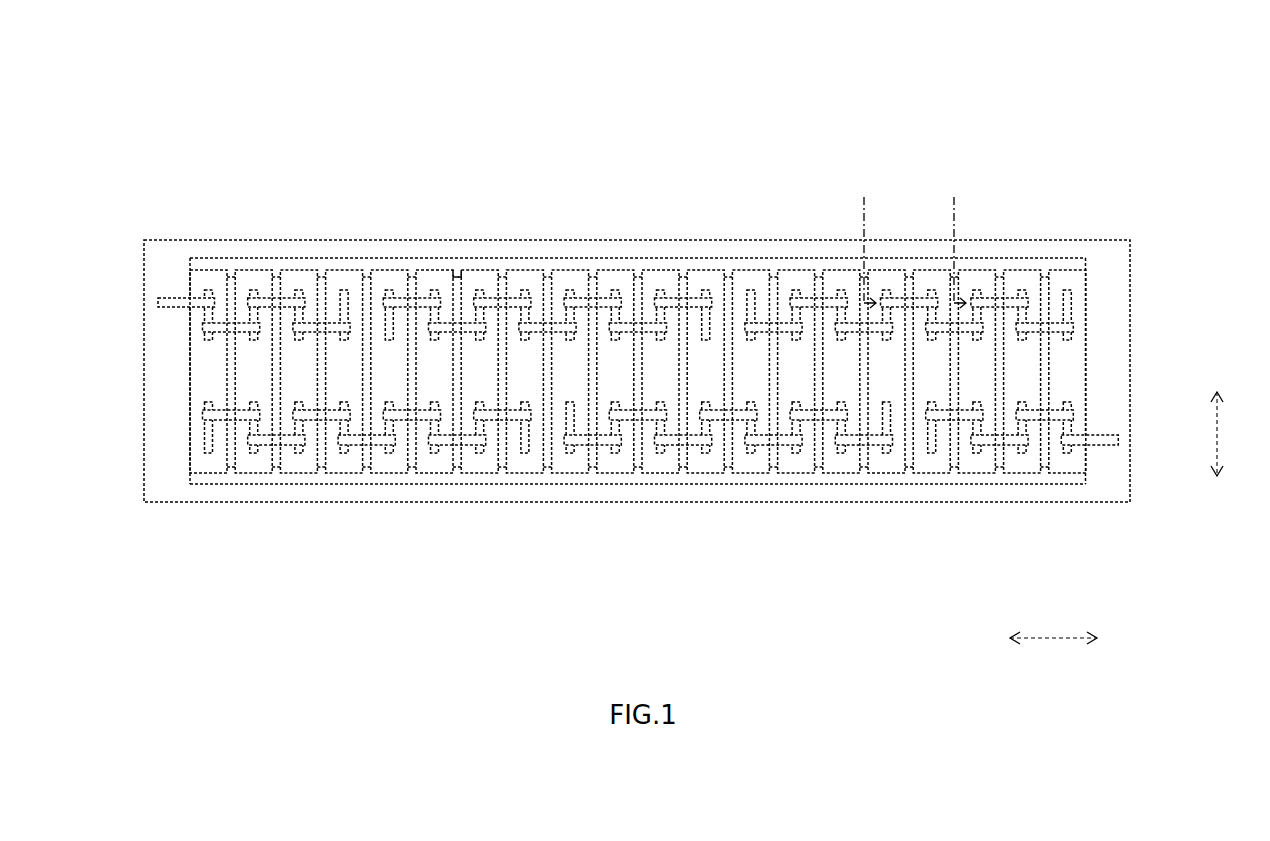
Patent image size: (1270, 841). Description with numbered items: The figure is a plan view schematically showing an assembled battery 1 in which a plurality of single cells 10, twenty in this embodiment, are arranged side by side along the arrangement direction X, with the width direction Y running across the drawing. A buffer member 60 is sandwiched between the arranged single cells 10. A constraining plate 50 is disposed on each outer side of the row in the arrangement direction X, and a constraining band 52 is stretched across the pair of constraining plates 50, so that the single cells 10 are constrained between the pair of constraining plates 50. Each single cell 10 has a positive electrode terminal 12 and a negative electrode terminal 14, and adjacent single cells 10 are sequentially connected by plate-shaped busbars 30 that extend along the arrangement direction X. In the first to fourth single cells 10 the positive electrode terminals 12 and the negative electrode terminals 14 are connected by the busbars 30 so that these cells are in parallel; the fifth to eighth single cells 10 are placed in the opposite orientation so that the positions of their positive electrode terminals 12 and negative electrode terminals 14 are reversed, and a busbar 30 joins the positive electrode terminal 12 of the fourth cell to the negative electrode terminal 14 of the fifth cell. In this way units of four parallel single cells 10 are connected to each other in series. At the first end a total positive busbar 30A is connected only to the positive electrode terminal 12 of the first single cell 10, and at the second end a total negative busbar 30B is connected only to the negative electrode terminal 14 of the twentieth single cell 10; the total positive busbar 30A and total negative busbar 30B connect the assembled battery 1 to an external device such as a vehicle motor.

The assembled battery 1 is at (152, 41).
The single cell 10 is at (265, 473).
The positive electrode terminal 12 is at (208, 290).
The negative electrode terminal 14 is at (389, 290).
The busbar 30 is at (268, 298).
The total positive busbar 30A is at (172, 298).
The total negative busbar 30B is at (1102, 445).
The constraining plate 50 is at (1131, 299).
The constraining band 52 is at (690, 241).
The buffer member 60 is at (457, 272).